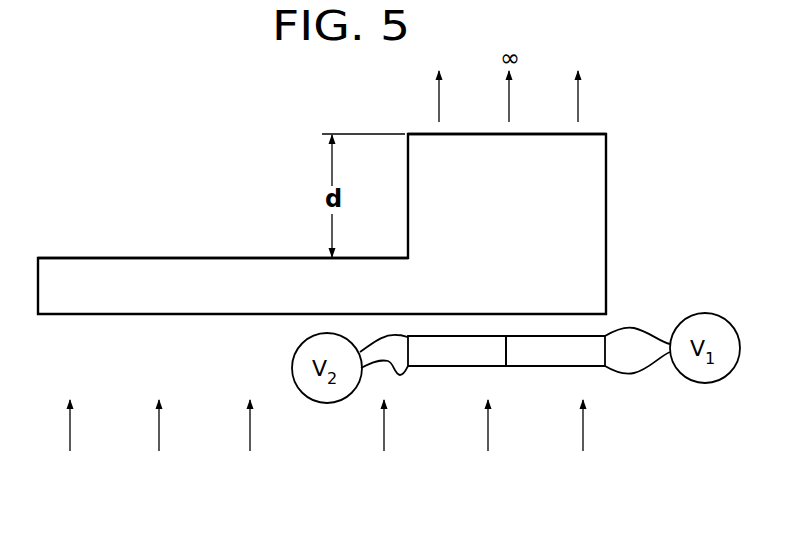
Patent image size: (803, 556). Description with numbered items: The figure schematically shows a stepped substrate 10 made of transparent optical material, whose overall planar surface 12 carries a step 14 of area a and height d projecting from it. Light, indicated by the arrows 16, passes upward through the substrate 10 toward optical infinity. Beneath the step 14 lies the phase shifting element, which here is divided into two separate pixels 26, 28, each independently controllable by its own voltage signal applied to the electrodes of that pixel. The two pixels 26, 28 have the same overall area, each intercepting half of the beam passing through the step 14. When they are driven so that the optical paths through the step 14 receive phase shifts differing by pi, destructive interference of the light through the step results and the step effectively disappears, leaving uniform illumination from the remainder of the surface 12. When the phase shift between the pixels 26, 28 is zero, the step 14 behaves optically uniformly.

The stepped substrate 10 is at (606, 230).
The surface 12 is at (170, 258).
The step 14 is at (593, 134).
The ion flux 16 is at (318, 438).
The pixel 26 is at (445, 367).
The pixel 28 is at (540, 367).